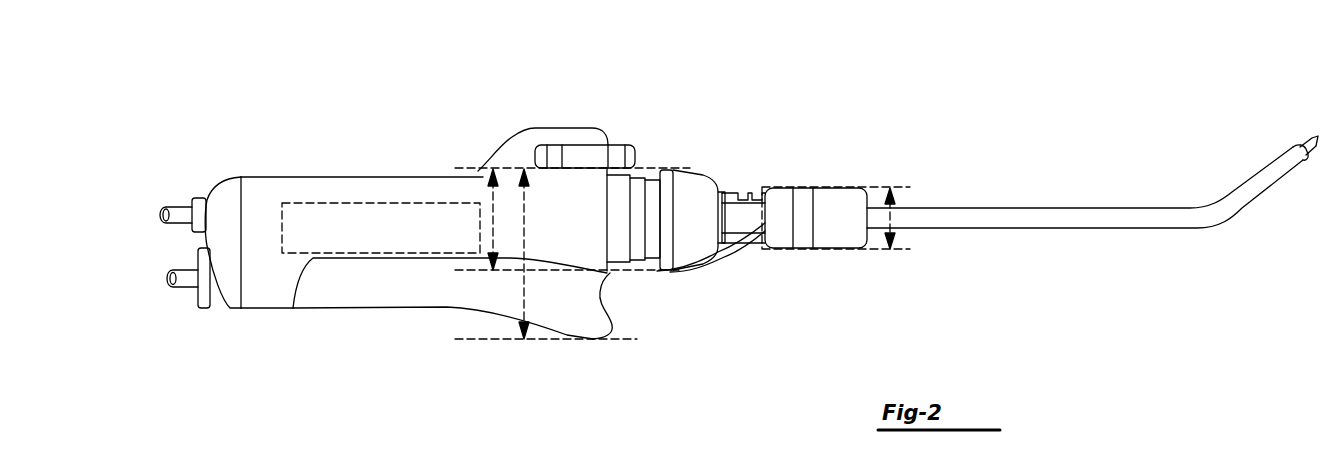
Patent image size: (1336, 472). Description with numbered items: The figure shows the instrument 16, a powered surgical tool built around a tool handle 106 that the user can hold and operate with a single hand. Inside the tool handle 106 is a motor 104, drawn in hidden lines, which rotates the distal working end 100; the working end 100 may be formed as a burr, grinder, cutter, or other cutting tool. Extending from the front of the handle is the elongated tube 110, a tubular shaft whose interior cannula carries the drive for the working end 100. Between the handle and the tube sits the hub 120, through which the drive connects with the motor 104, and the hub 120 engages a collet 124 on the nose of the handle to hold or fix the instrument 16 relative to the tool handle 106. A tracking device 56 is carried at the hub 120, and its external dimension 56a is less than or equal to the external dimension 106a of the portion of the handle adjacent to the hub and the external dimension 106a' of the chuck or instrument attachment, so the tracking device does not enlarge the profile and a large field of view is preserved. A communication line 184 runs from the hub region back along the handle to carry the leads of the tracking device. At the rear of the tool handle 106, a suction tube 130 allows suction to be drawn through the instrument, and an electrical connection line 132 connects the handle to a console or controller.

The instrument 16 is at (1073, 258).
The tracking device 56 is at (830, 188).
The external dimension 56a is at (893, 222).
The working end 100 is at (1310, 135).
The motor 104 is at (332, 203).
The tool handle 106 is at (390, 177).
The external dimension 106a is at (452, 298).
The external dimension 106a' is at (565, 211).
The elongated tube 110 is at (995, 207).
The hub 120 is at (741, 190).
The collet 124 is at (688, 170).
The suction tube 130 is at (178, 207).
The electrical connection line 132 is at (167, 278).
The communication line 184 is at (657, 274).